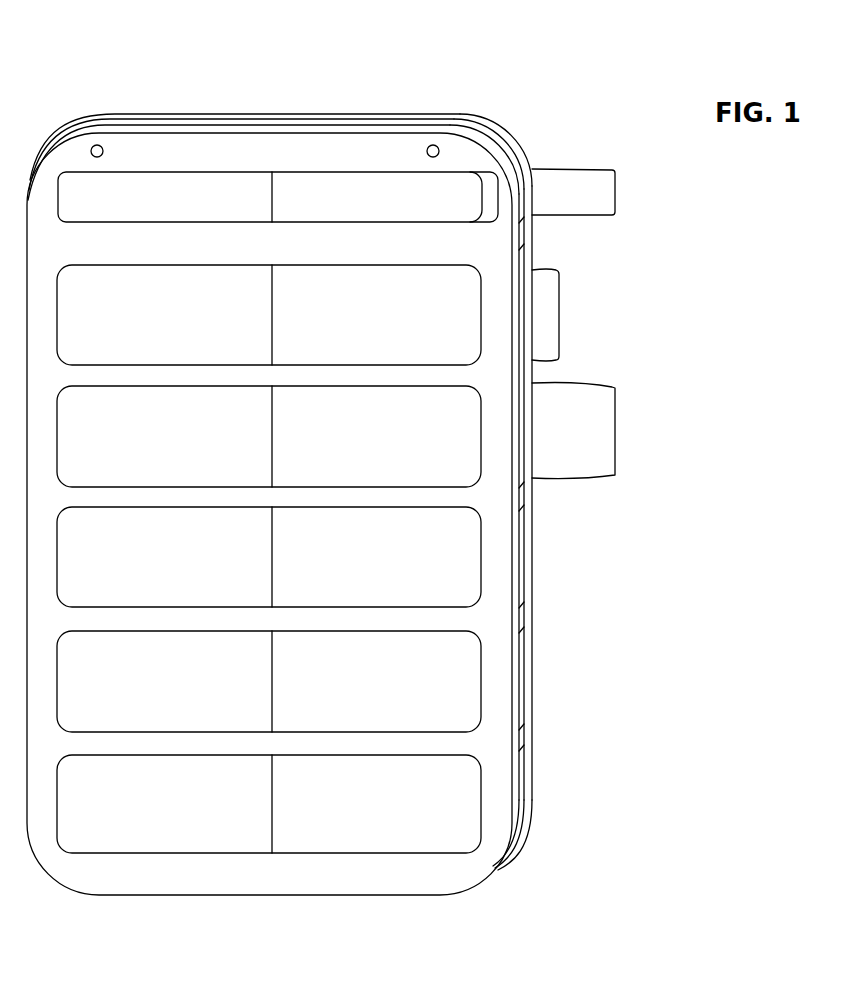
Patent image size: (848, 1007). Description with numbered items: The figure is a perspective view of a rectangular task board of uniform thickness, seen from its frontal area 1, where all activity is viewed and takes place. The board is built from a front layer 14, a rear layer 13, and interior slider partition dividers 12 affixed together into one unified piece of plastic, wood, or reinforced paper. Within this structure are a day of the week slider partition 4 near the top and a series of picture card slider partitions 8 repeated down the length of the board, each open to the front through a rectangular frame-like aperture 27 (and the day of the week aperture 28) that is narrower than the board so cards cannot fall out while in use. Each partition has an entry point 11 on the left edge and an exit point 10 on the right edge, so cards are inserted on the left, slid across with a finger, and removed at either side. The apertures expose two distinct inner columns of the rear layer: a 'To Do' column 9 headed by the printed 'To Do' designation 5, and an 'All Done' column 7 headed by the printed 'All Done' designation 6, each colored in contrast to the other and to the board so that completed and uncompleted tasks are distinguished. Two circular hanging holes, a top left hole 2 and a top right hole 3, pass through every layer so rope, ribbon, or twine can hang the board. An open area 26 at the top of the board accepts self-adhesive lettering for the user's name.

The frontal area of the board 1 is at (490, 247).
The top left hanging hole 2 is at (105, 151).
The top right hanging hole 3 is at (427, 150).
The day of the week slider partition 4 is at (615, 197).
The 'To Do' designation 5 is at (167, 233).
The 'All Done' designation 6 is at (375, 230).
The picture card partition column 7 is at (425, 293).
The picture card slider partition 8 is at (615, 430).
The 'To Do' column 9 is at (167, 430).
The exit point 10 is at (522, 550).
The entry point 11 is at (27, 549).
The interior layer slider partition divider 12 is at (522, 738).
The inner rear layer of the board 13 is at (533, 785).
The front layer of the board 14 is at (523, 823).
The open area at the top of the board 26 is at (272, 150).
The picture card slider partition front aperture 27 is at (559, 313).
The day of the week slider partition aperture 28 is at (503, 165).